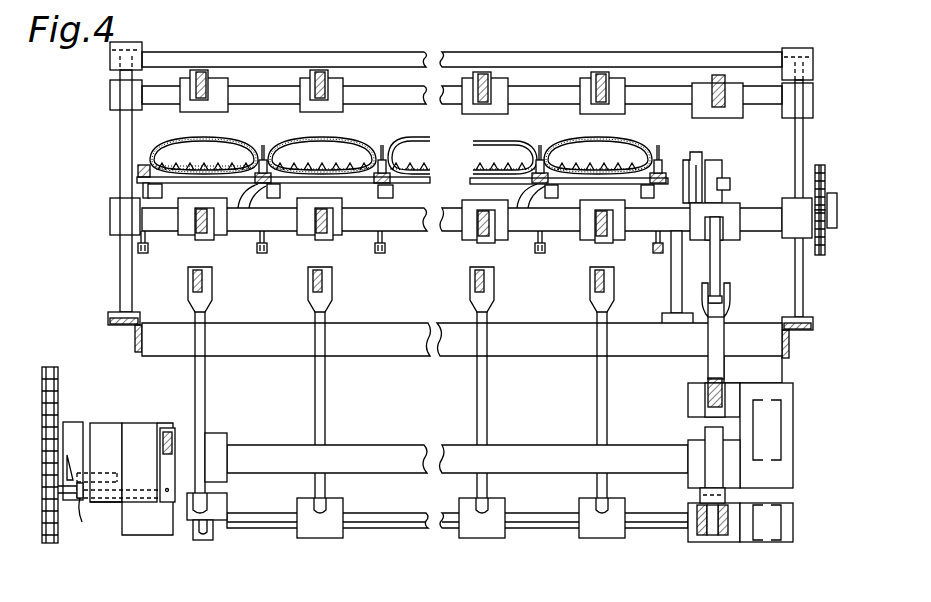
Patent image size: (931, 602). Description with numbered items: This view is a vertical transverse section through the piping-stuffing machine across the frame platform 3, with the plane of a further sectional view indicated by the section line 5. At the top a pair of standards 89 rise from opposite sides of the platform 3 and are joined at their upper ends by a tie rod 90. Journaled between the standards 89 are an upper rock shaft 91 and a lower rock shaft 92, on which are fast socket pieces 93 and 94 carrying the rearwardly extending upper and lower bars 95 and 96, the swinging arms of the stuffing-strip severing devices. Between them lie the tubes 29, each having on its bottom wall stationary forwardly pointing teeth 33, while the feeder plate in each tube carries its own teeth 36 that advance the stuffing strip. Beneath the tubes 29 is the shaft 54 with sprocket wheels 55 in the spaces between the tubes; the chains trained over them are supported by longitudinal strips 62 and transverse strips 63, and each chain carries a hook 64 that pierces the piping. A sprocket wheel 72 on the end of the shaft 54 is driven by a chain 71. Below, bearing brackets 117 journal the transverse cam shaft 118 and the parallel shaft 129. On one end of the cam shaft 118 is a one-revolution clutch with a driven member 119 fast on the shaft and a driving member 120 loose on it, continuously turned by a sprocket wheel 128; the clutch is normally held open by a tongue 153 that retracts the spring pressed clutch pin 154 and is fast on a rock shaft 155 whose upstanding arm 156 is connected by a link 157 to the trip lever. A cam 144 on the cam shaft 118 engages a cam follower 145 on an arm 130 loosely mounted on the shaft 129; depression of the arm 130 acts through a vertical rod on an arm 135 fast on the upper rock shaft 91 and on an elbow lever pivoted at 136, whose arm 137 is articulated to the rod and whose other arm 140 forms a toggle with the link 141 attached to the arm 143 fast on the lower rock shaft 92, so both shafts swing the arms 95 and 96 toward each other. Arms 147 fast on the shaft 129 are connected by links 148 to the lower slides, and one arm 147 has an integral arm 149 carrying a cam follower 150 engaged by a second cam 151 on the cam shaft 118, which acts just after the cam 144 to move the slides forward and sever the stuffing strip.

The section line 5- 5 is at (148, 400).
The frame platform 3 is at (688, 78).
The tie rod 90 is at (391, 60).
The upper rock shaft 91 is at (370, 104).
The socket piece 93 is at (316, 74).
The upper bar 95 is at (325, 80).
The arm 135 is at (719, 75).
The standards 89 is at (120, 139).
The chain 71 is at (821, 165).
The sprocket wheel 72 is at (826, 256).
The tube 29 is at (212, 138).
The teeth 33 is at (346, 156).
The teeth 36 is at (190, 163).
The sprocket wheels 55 is at (265, 160).
The hook 64 is at (256, 152).
The longitudinal strips 62 is at (563, 167).
The transverse strips 63 is at (330, 184).
The shaft 54 is at (430, 206).
The lower rock shaft 92 is at (402, 232).
The socket piece 94 is at (494, 244).
The lower bar 96 is at (479, 238).
The link 148 is at (210, 283).
The arms 147 is at (206, 379).
The arm 143 is at (730, 243).
The toggle link 141 is at (720, 267).
The elbow lever arm 140 is at (725, 341).
The elbow lever arm 137 is at (707, 386).
The pivot 136 is at (692, 402).
The cam 144 is at (706, 448).
The cam follower 145 is at (706, 503).
The arm 130 is at (700, 526).
The brackets 117 is at (150, 528).
The cam shaft 118 is at (373, 455).
The shaft 129 is at (390, 530).
The sprocket wheel 128 is at (50, 367).
The driving clutch member 120 is at (66, 421).
The driven clutch member 119 is at (108, 424).
The clutch pin 154 is at (97, 472).
The rock shaft 155 is at (136, 490).
The link 157 is at (167, 428).
The upstanding arm 156 is at (174, 468).
The cam 151 is at (212, 402).
The cam follower 150 is at (207, 498).
The tongue 153 is at (85, 512).
The arm 149 is at (207, 533).